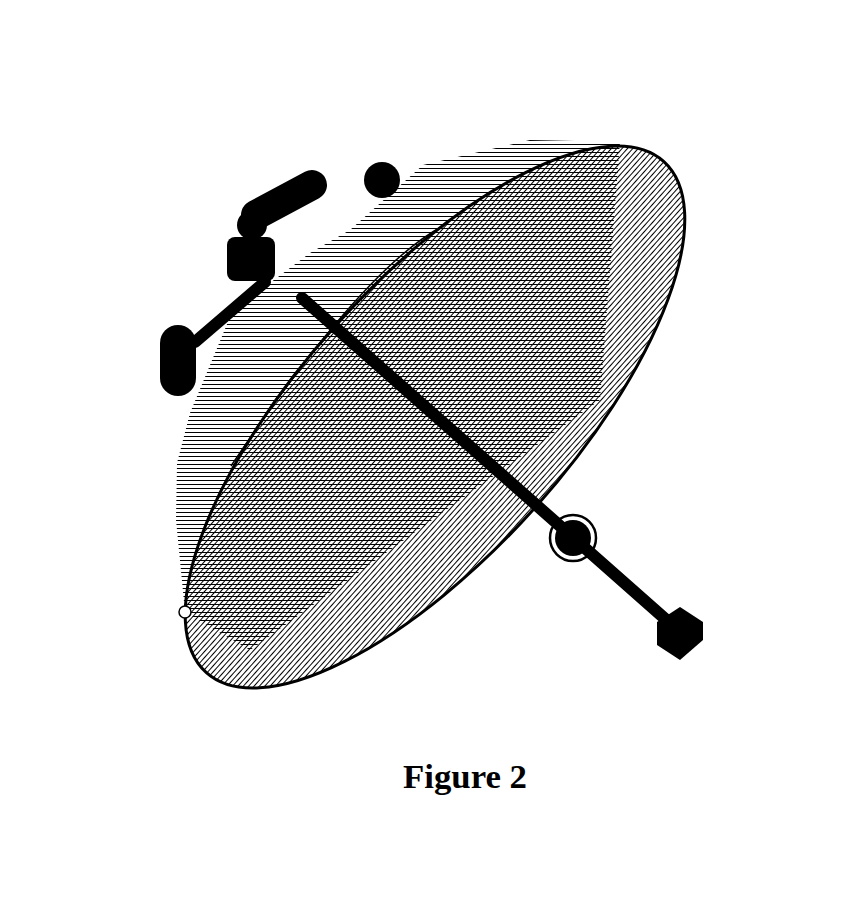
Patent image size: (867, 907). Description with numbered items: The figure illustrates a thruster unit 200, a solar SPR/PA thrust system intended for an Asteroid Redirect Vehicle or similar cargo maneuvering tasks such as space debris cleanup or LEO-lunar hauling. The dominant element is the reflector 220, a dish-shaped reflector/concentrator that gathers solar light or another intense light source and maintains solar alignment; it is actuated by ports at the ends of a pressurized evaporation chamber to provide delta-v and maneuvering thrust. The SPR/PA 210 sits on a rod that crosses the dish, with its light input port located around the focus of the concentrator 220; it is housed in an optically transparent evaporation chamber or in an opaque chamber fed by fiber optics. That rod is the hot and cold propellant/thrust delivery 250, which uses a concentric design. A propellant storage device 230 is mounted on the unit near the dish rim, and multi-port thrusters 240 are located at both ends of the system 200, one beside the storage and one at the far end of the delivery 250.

The thruster unit 200 is at (318, 82).
The SPR/PA 210 is at (592, 523).
The reflector 220 is at (552, 300).
The propellant storage device 230 is at (258, 172).
The thruster 240 is at (215, 255).
The hot and cold propellant/thrust delivery 250 is at (407, 403).